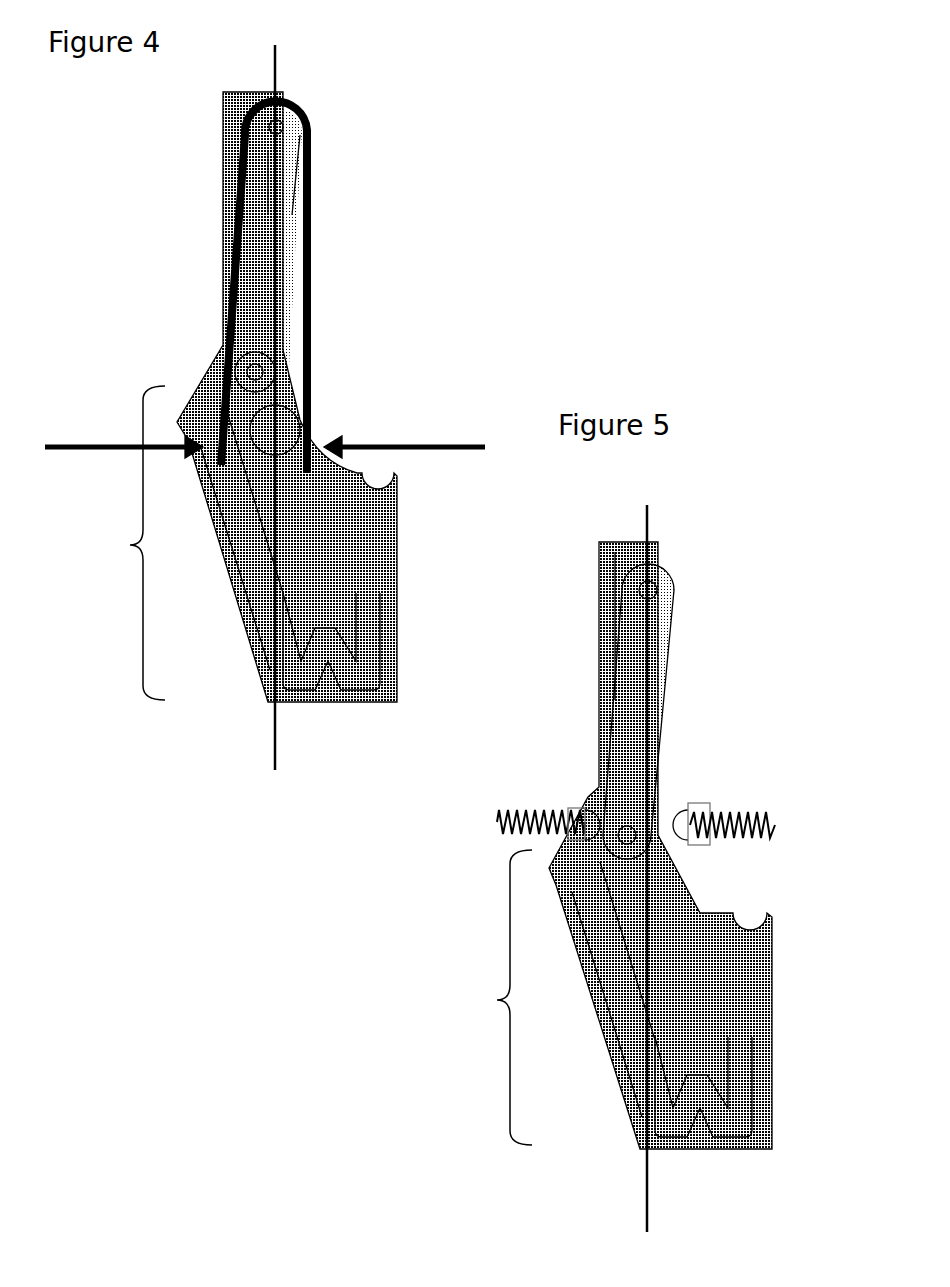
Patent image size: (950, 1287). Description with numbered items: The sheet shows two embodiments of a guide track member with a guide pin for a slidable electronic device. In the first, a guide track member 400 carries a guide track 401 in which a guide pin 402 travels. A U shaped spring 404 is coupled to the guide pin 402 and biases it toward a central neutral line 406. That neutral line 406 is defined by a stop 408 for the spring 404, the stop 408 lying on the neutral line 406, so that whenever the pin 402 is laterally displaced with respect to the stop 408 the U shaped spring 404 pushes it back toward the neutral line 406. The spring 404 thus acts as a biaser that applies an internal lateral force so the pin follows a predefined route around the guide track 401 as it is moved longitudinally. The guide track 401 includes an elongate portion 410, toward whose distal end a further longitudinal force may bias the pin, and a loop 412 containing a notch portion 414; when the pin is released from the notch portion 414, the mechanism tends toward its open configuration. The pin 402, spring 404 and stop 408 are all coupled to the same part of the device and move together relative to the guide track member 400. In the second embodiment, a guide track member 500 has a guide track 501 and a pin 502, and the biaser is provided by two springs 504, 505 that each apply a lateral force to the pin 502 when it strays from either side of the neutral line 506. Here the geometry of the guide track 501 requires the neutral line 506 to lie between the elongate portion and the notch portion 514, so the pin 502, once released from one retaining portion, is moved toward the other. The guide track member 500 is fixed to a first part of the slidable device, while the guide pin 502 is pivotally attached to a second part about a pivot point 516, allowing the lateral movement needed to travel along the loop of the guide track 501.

In FIG. 4, the guide track member 400 is at (222, 142).
In FIG. 4, the guide track 401 is at (328, 524).
In FIG. 4, the guide pin 402 is at (248, 362).
In FIG. 4, the U shaped spring 404 is at (311, 270).
In FIG. 4, the neutral line 406 is at (278, 62).
In FIG. 4, the stop 408 is at (290, 407).
In FIG. 4, the elongate portion 410 is at (252, 193).
In FIG. 4, the loop 412 is at (121, 543).
In FIG. 4, the notch portion 414 is at (347, 620).
In FIG. 5, the guide track member 500 is at (597, 608).
In FIG. 5, the guide track 501 is at (679, 928).
In FIG. 5, the guide pin 502 is at (615, 830).
In FIG. 5, the spring 504 is at (490, 830).
In FIG. 5, the spring 505 is at (742, 800).
In FIG. 5, the neutral line 506 is at (650, 525).
In FIG. 5, the notch portion 514 is at (800, 1030).
In FIG. 5, the pivot point 516 is at (657, 587).